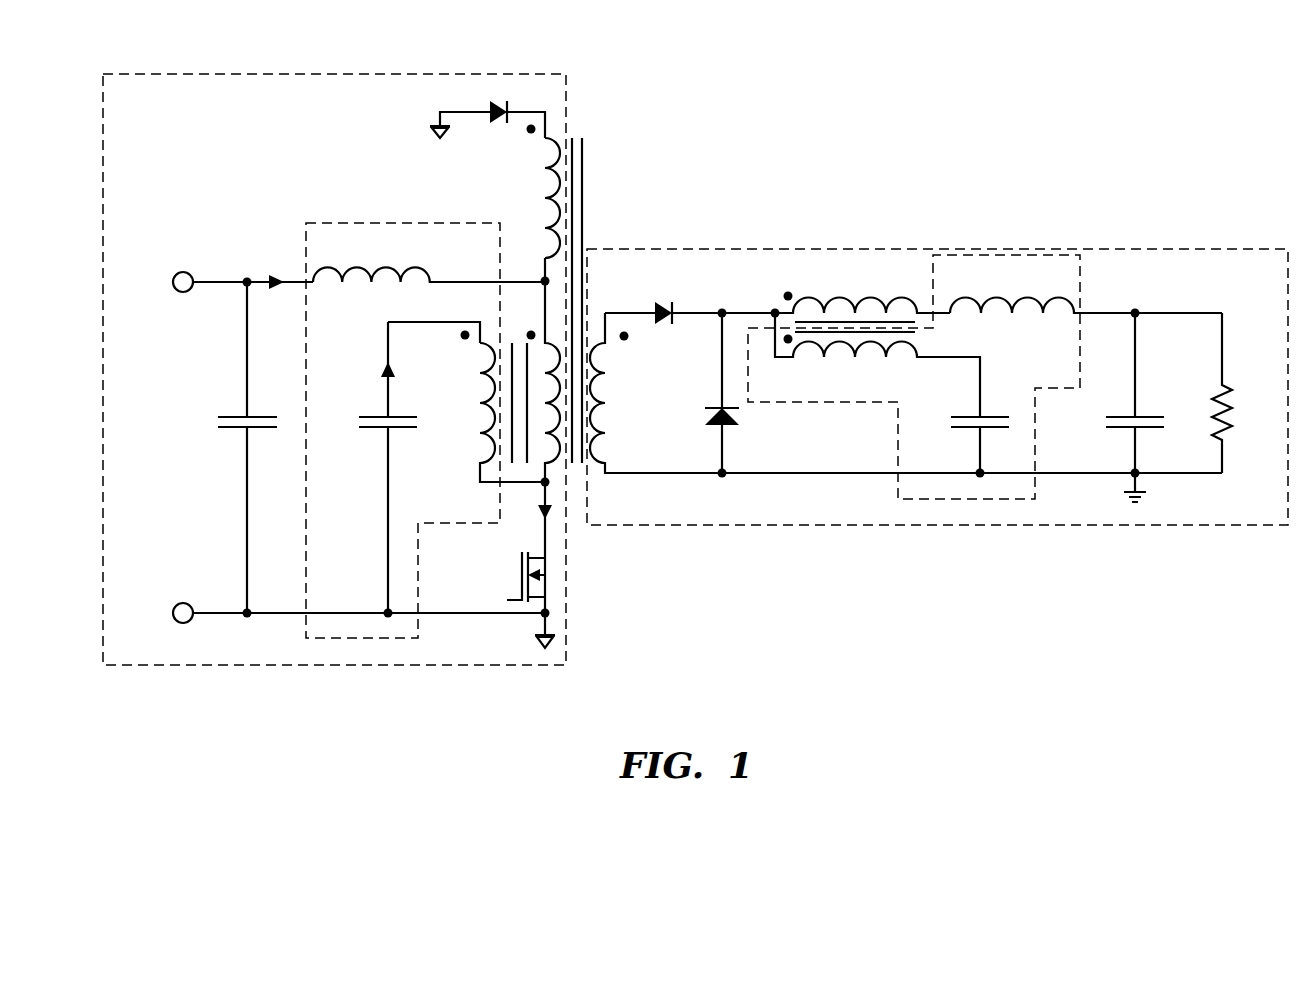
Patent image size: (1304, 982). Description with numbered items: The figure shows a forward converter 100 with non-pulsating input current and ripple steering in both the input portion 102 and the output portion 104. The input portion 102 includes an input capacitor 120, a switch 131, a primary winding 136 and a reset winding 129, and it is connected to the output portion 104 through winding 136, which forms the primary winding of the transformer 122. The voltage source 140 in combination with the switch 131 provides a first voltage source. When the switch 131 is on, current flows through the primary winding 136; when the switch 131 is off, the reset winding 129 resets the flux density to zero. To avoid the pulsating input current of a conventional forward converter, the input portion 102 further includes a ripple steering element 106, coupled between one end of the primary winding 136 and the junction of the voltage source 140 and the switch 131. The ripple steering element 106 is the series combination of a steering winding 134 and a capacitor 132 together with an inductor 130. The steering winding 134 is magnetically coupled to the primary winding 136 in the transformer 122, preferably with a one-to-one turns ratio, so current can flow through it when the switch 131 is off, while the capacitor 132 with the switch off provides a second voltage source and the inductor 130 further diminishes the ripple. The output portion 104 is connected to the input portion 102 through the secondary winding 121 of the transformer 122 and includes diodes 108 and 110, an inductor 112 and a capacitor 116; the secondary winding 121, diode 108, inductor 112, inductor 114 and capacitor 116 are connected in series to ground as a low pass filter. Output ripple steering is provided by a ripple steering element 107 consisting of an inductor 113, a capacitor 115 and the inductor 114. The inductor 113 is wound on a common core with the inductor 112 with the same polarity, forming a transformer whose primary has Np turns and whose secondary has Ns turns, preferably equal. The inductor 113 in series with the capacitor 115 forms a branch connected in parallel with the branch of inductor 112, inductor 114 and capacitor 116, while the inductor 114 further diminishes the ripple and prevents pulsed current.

The forward converter 100 is at (870, 116).
The input portion 102 is at (216, 74).
The output portion 104 is at (1140, 249).
The ripple steering element 106 is at (350, 640).
The ripple steering element 107 is at (965, 500).
The diode 108 is at (665, 296).
The diode 110 is at (735, 426).
The inductor 112 is at (880, 298).
The inductor 113 is at (812, 345).
The inductor 114 is at (1062, 298).
The capacitor 115 is at (992, 428).
The capacitor 116 is at (1150, 428).
The input capacitor 120 is at (232, 430).
The secondary winding 121 is at (606, 428).
The transformer 122 is at (590, 320).
The reset winding 129 is at (556, 138).
The inductor 130 is at (325, 268).
The switch 131 is at (548, 582).
The capacitor 132 is at (372, 430).
The steering winding 134 is at (492, 338).
The primary winding 136 is at (556, 338).
The voltage source 140 is at (118, 370).